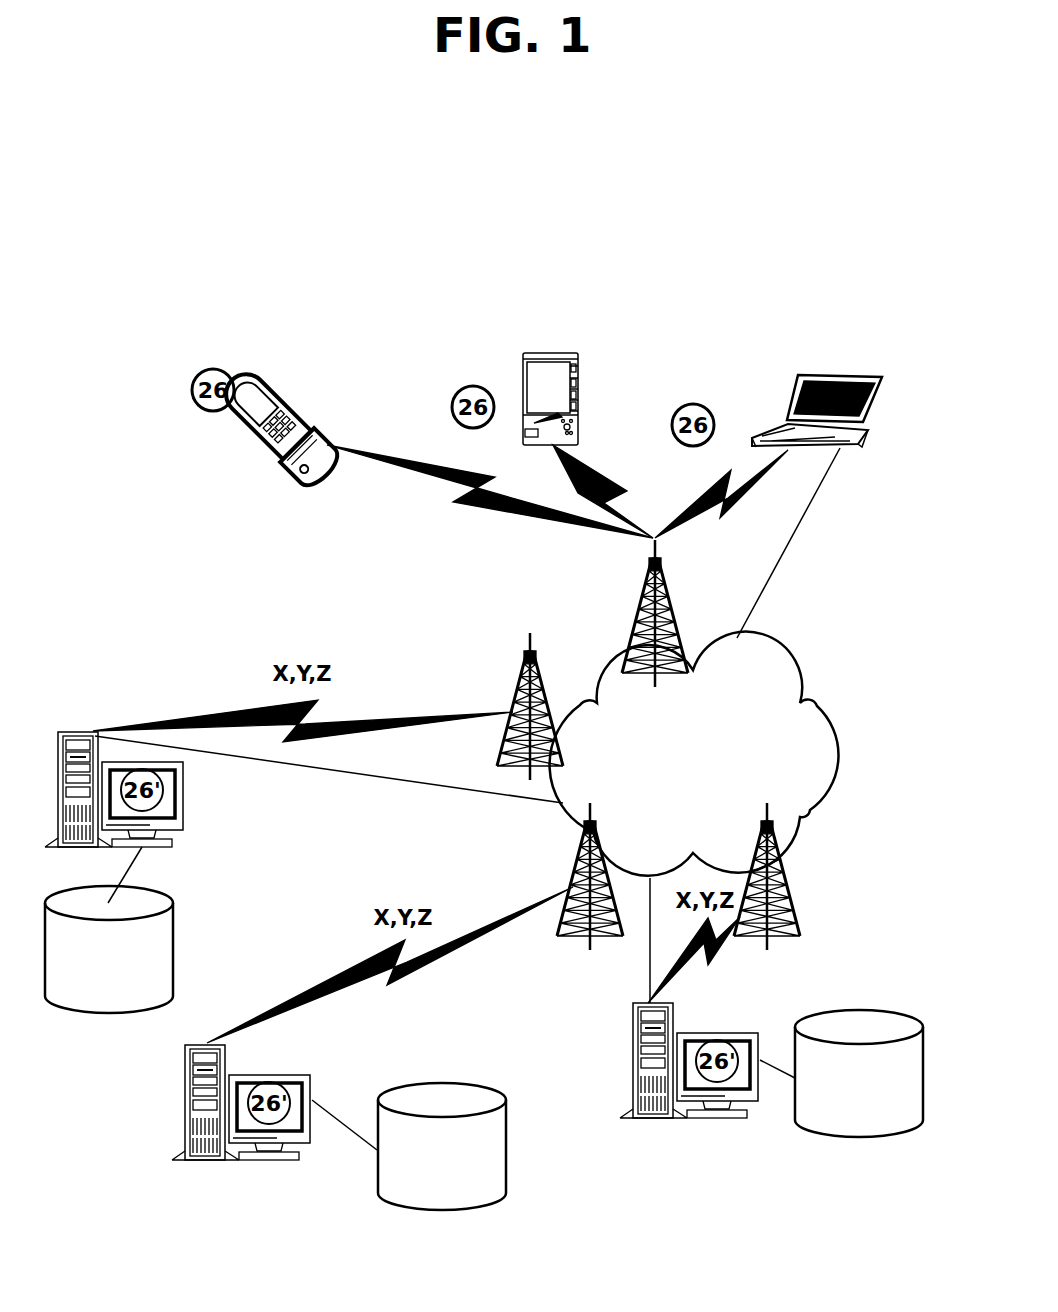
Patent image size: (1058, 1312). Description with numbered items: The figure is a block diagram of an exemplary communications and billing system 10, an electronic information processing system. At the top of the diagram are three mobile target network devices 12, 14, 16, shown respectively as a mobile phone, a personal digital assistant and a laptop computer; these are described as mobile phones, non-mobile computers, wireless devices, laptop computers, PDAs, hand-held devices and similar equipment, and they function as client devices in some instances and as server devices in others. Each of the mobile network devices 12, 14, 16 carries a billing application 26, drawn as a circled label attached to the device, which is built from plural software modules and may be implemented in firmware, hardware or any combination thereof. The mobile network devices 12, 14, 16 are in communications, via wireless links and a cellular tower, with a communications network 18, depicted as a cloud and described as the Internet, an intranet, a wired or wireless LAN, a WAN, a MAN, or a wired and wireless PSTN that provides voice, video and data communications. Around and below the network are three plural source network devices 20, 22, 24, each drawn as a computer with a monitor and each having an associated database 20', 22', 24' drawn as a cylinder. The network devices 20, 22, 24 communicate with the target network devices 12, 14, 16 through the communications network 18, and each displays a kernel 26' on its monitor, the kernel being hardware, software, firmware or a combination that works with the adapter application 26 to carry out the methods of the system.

The communications and billing system 10 is at (773, 205).
The mobile network device 12 is at (312, 392).
The mobile network device 14 is at (578, 353).
The mobile network device 16 is at (845, 377).
The communications network 18 is at (838, 758).
The network device 20 is at (162, 792).
The database 20' is at (138, 930).
The network device 22 is at (259, 1088).
The database 22' is at (423, 1123).
The network device 24 is at (696, 1048).
The database 24' is at (841, 1120).
The billing application 26 is at (481, 407).
The kernel 26' is at (429, 946).